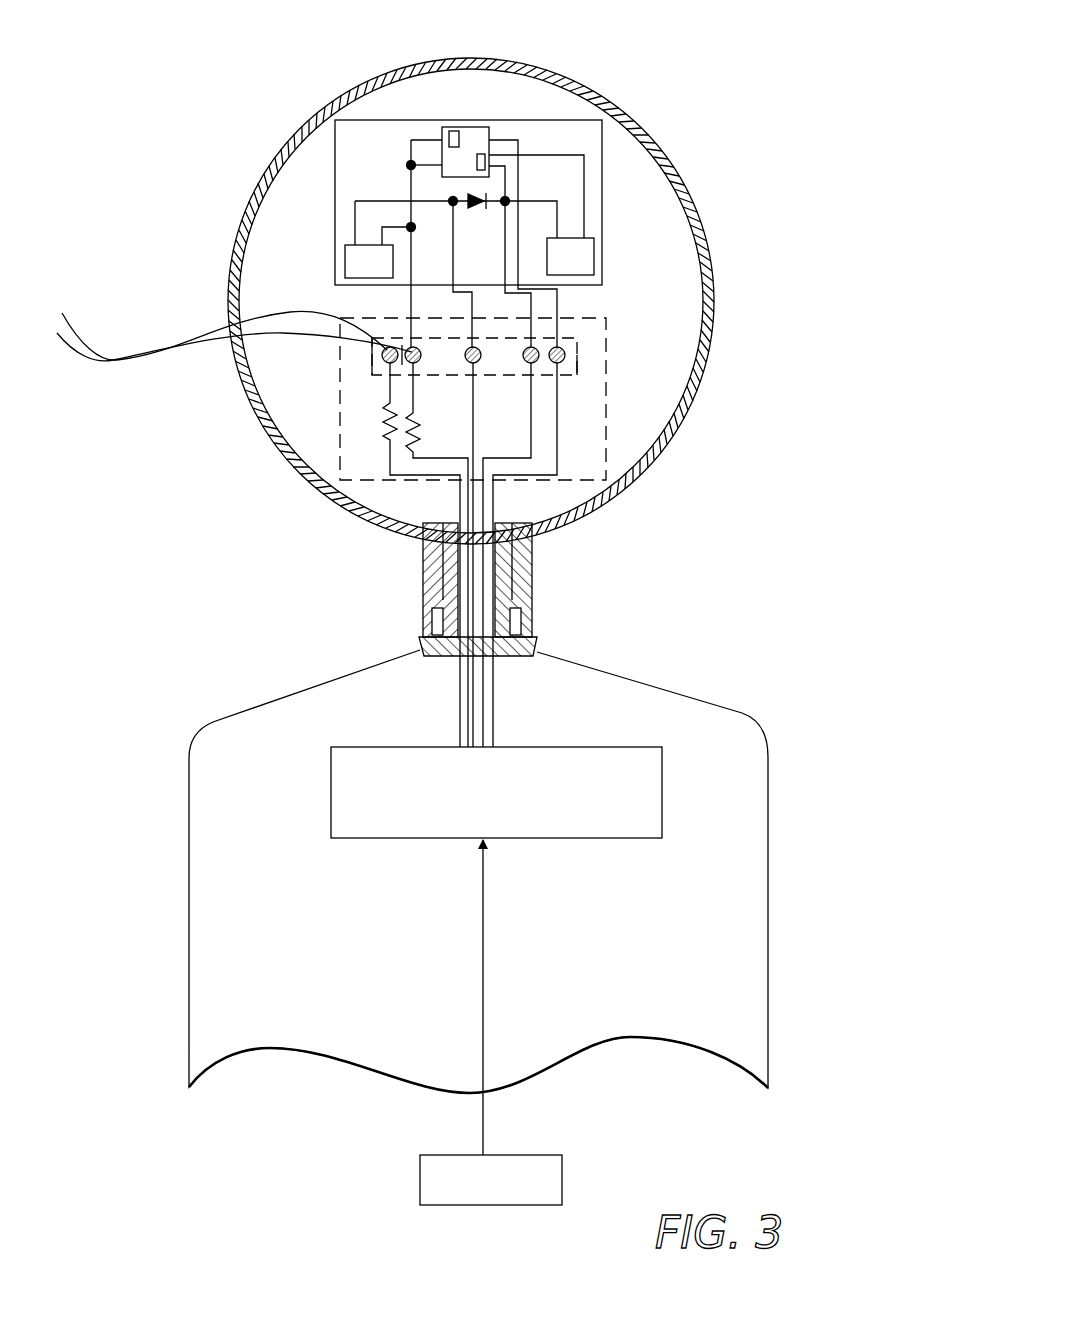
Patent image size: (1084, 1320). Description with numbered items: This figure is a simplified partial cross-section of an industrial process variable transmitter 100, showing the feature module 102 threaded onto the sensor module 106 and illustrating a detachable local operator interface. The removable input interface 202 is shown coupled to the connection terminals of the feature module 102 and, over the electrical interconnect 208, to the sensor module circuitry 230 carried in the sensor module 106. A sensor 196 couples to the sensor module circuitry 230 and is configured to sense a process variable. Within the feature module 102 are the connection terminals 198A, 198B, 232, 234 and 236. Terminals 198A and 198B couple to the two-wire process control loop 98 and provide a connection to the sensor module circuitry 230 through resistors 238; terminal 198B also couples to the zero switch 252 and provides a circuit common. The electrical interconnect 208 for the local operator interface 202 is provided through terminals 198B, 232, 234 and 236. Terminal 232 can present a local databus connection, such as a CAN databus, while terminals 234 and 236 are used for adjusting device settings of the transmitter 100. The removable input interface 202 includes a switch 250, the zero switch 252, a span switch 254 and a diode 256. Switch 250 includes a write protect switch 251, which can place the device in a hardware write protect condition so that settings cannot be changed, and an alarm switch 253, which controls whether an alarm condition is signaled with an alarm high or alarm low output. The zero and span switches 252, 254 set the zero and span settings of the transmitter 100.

The transmitter 100 is at (826, 262).
The feature module 102 is at (688, 182).
The sensor module 106 is at (680, 690).
The two-wire process control loop 98 is at (123, 360).
The sensor 196 is at (420, 1180).
The connection terminal 198A is at (385, 361).
The connection terminal 198B is at (410, 362).
The removable input interface (LOI) 202 is at (462, 188).
The electrical interconnect 208 is at (340, 299).
The sensor module circuitry 230 is at (600, 840).
The connection terminal 232 is at (470, 364).
The connection terminal 234 is at (565, 347).
The connection terminal 236 is at (540, 352).
The resistors 238 is at (408, 440).
The switch 250 is at (392, 103).
The write protect switch 251 is at (483, 162).
The zero switch 252 is at (345, 254).
The alarm switch 253 is at (467, 140).
The span switch 254 is at (594, 254).
The diode 256 is at (484, 192).